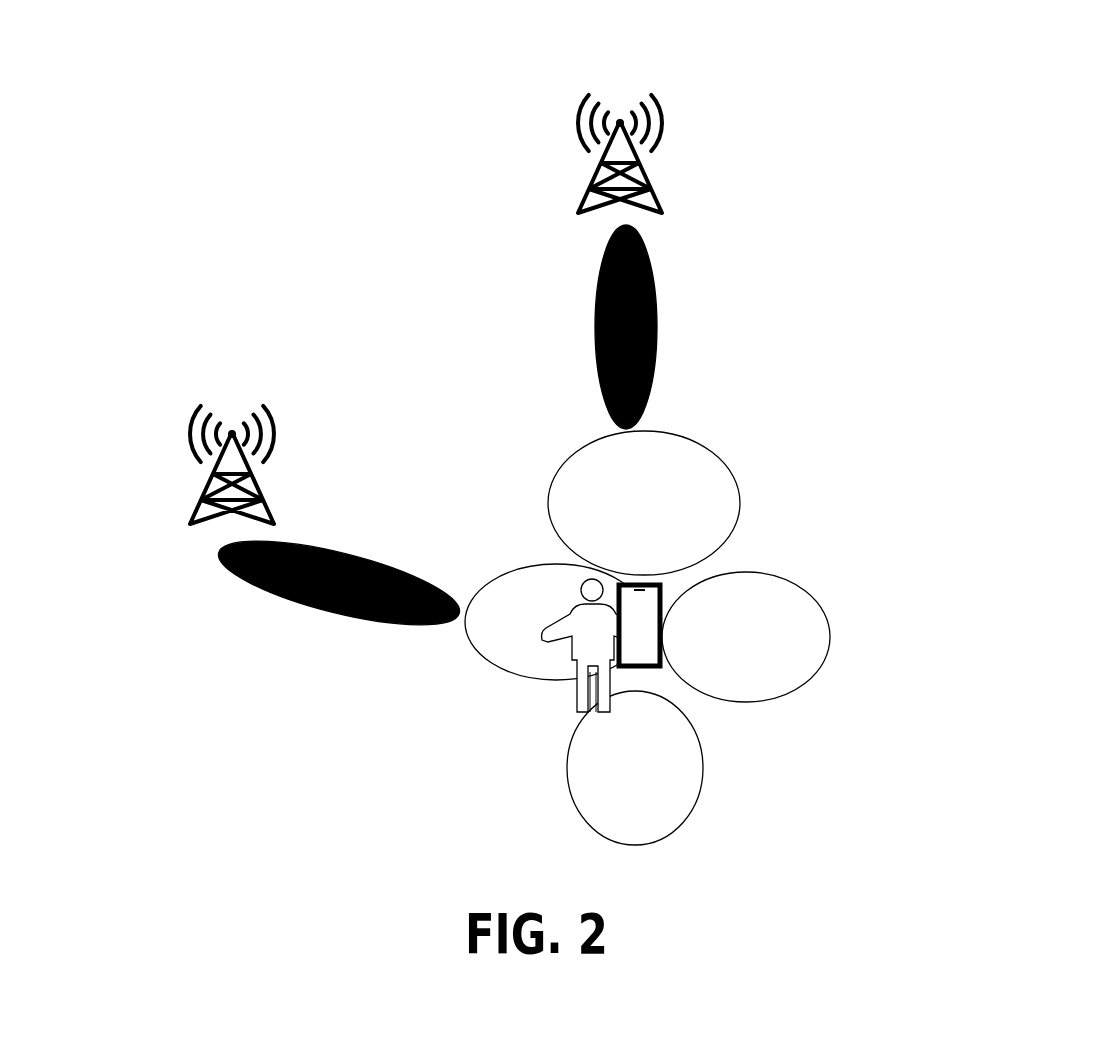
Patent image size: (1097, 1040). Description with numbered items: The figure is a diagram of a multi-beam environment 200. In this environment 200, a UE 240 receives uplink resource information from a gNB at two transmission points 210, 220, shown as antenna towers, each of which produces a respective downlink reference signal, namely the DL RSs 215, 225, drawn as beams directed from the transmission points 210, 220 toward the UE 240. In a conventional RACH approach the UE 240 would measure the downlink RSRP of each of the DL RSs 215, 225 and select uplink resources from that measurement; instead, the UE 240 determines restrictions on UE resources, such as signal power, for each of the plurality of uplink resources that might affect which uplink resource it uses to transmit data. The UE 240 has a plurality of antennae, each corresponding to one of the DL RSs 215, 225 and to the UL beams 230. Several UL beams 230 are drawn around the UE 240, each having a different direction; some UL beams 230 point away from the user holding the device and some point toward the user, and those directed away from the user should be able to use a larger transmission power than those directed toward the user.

The multi-beam environment 200 is at (1016, 82).
The transmission point 210 is at (680, 172).
The DL RS 215 is at (650, 395).
The transmission point 220 is at (322, 483).
The DL RS 225 is at (360, 558).
The UL beams 230 is at (742, 537).
The UE 240 is at (517, 690).